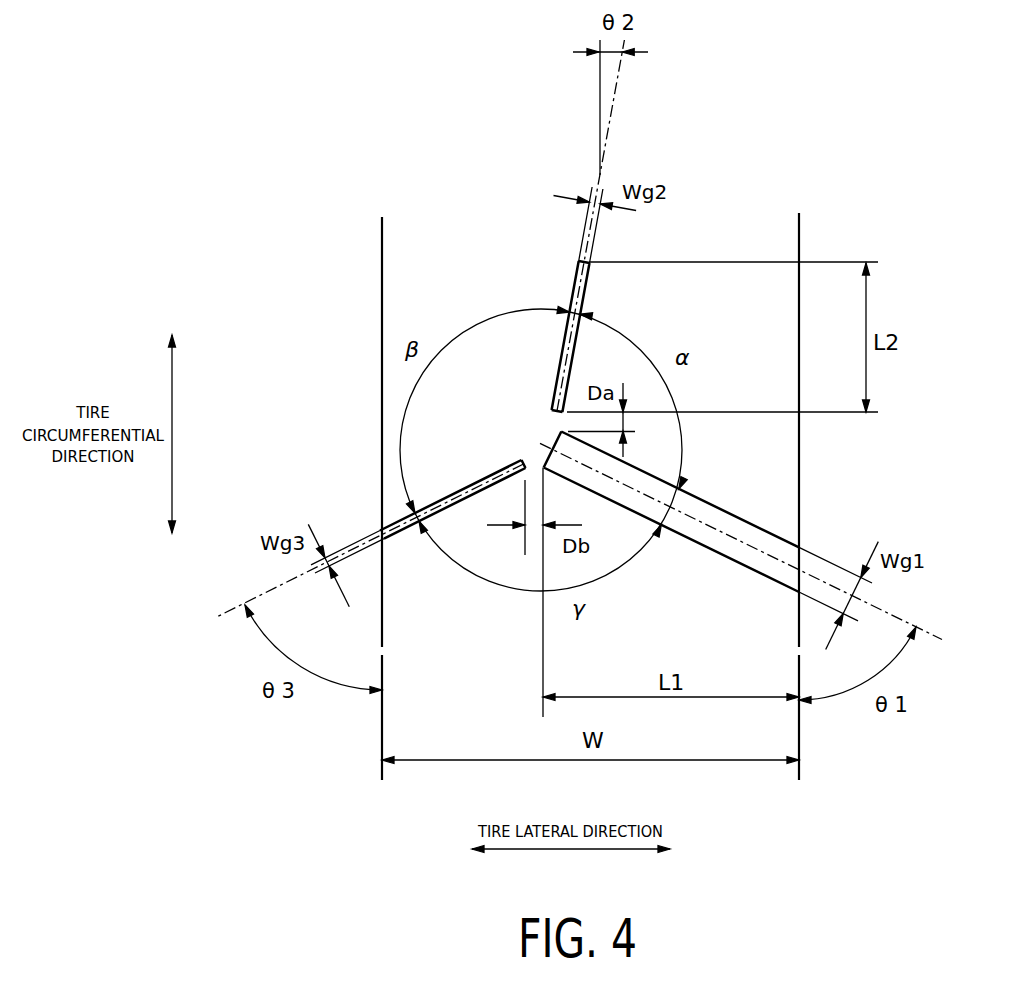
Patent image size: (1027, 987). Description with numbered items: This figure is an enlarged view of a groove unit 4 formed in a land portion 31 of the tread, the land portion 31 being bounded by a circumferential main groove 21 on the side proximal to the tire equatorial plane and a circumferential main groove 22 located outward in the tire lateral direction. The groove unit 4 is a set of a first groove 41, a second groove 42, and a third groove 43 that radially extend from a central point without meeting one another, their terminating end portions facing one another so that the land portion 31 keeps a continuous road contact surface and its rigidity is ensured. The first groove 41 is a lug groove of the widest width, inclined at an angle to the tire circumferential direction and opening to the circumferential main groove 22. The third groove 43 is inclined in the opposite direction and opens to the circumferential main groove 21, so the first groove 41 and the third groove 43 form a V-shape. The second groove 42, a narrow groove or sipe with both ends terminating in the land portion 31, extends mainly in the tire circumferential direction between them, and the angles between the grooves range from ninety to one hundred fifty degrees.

The groove unit 4 is at (515, 425).
The circumferential main groove 21 is at (352, 252).
The circumferential main groove 22 is at (815, 250).
The land portion 31 is at (442, 212).
The first groove 41 is at (713, 552).
The second groove 42 is at (577, 270).
The third groove 43 is at (395, 522).